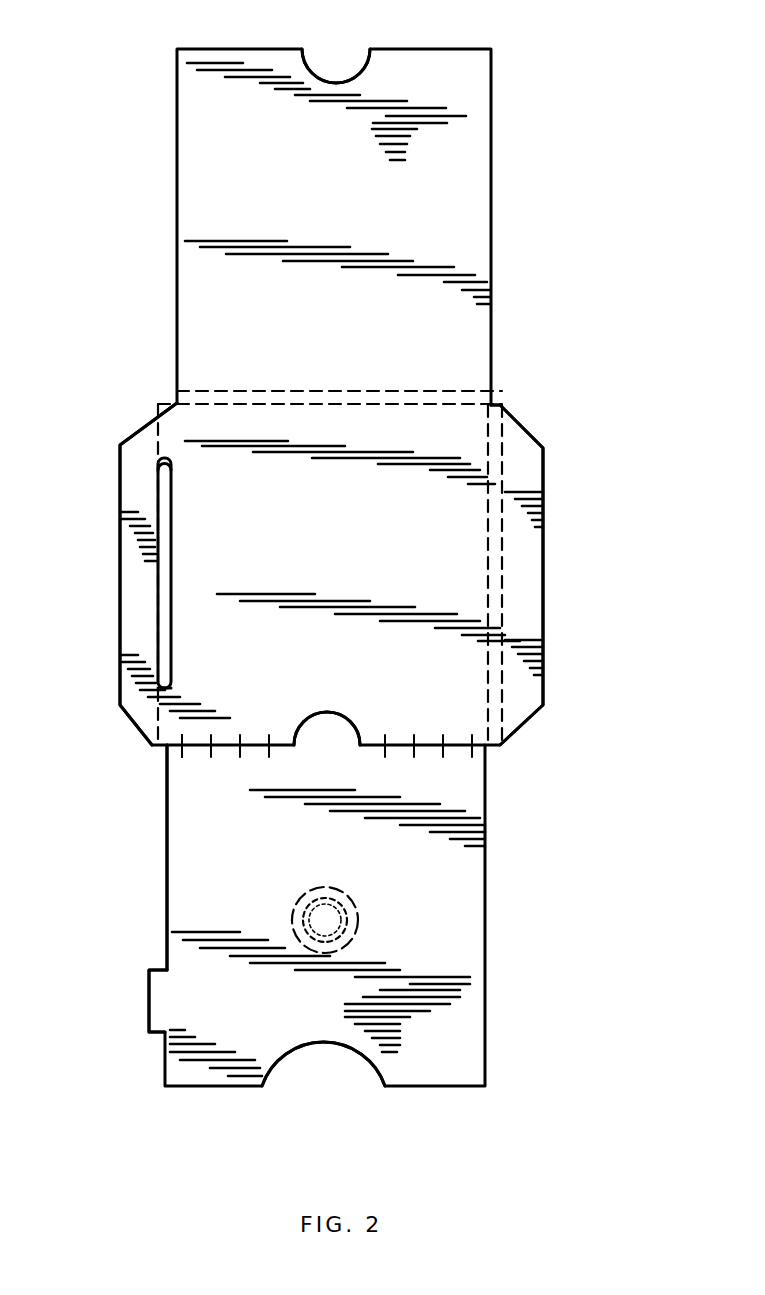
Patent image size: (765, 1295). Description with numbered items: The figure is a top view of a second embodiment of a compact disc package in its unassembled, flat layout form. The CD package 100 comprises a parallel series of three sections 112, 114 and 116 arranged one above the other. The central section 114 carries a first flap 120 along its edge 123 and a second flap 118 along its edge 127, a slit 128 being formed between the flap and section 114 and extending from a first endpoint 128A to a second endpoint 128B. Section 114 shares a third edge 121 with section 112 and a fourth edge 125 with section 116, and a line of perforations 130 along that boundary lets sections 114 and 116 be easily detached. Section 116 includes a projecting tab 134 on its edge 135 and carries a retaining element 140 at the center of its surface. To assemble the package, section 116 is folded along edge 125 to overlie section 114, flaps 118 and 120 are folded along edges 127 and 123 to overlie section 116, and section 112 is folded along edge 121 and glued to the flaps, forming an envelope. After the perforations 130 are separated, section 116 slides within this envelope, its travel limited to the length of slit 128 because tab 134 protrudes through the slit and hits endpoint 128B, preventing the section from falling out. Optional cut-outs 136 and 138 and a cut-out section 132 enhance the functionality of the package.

The CD package 100 is at (593, 553).
The section 112 is at (466, 200).
The section 114 is at (466, 455).
The section 116 is at (452, 853).
The second flap 118 is at (132, 725).
The first flap 120 is at (515, 695).
The third edge 121 is at (466, 398).
The edge 123 is at (506, 742).
The fourth edge 125 is at (450, 750).
The edge 127 is at (165, 403).
The slit 128 is at (160, 596).
The endpoint 128A is at (172, 455).
The endpoint 128B is at (170, 690).
The perforations 130 is at (181, 765).
The cut-out section 132 is at (318, 1048).
The projecting tab 134 is at (148, 1030).
The edge 135 is at (167, 880).
The cut-out 136 is at (343, 82).
The cut-out 138 is at (325, 716).
The retaining element 140 is at (356, 898).